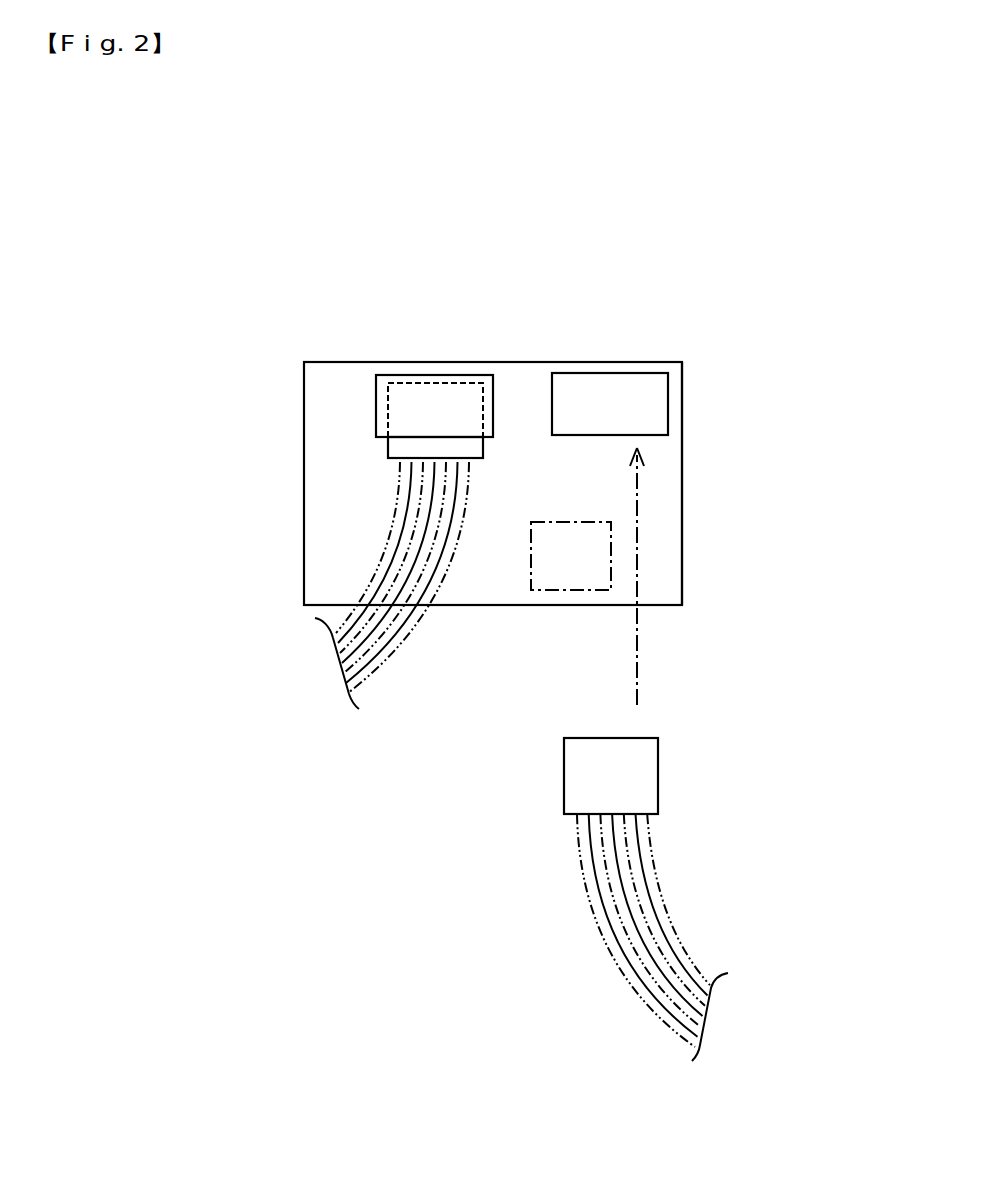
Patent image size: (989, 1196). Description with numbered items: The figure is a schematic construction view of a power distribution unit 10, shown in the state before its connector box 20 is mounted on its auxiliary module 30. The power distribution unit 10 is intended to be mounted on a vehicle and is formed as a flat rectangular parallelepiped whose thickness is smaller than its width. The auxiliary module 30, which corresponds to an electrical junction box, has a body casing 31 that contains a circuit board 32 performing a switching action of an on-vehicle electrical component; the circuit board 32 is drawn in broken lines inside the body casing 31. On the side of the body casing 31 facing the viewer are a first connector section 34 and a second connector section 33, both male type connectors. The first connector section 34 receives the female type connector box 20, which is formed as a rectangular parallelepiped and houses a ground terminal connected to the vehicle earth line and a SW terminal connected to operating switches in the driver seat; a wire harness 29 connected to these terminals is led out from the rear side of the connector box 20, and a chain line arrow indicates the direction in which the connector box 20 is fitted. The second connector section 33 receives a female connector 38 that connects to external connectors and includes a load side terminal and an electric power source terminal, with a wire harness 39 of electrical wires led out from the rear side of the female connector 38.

The power distribution unit 10 is at (722, 220).
The connector box 20 is at (660, 780).
The wire harness 29 is at (660, 895).
The auxiliary module 30 is at (242, 438).
The body casing 31 is at (682, 385).
The circuit board 32 is at (531, 560).
The second connector section 33 is at (428, 375).
The first connector section 34 is at (598, 373).
The female connector 38 is at (388, 450).
The wire harness 39 is at (385, 527).